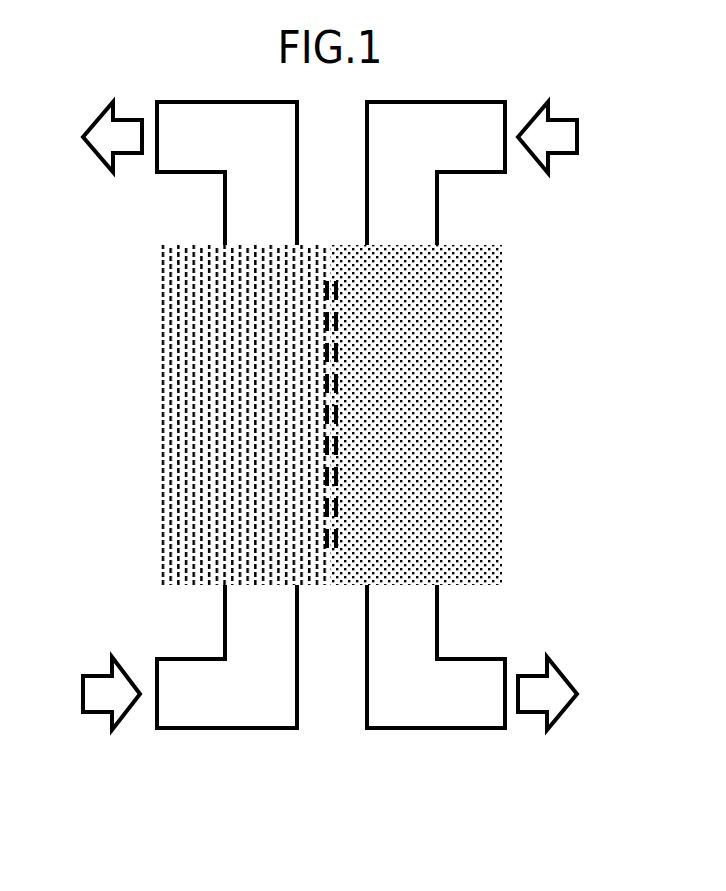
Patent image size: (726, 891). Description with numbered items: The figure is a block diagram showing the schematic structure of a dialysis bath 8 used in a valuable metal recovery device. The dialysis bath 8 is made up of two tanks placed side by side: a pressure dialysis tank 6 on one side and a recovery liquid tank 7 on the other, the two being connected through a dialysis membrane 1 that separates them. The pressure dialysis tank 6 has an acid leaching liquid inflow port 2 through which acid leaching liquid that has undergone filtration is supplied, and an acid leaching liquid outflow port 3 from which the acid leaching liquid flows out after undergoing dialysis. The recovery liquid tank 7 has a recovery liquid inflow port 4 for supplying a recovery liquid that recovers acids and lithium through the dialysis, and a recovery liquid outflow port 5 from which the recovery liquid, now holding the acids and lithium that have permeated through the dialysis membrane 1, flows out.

The dialysis membrane 1 is at (327, 413).
The acid leaching liquid inflow port 2 is at (97, 693).
The acid leaching liquid outflow port 3 is at (98, 137).
The recovery liquid inflow port 4 is at (562, 137).
The recovery liquid outflow port 5 is at (562, 693).
The pressure dialysis tank 6 is at (200, 520).
The recovery liquid tank 7 is at (502, 336).
The dialysis bath 8 is at (265, 792).